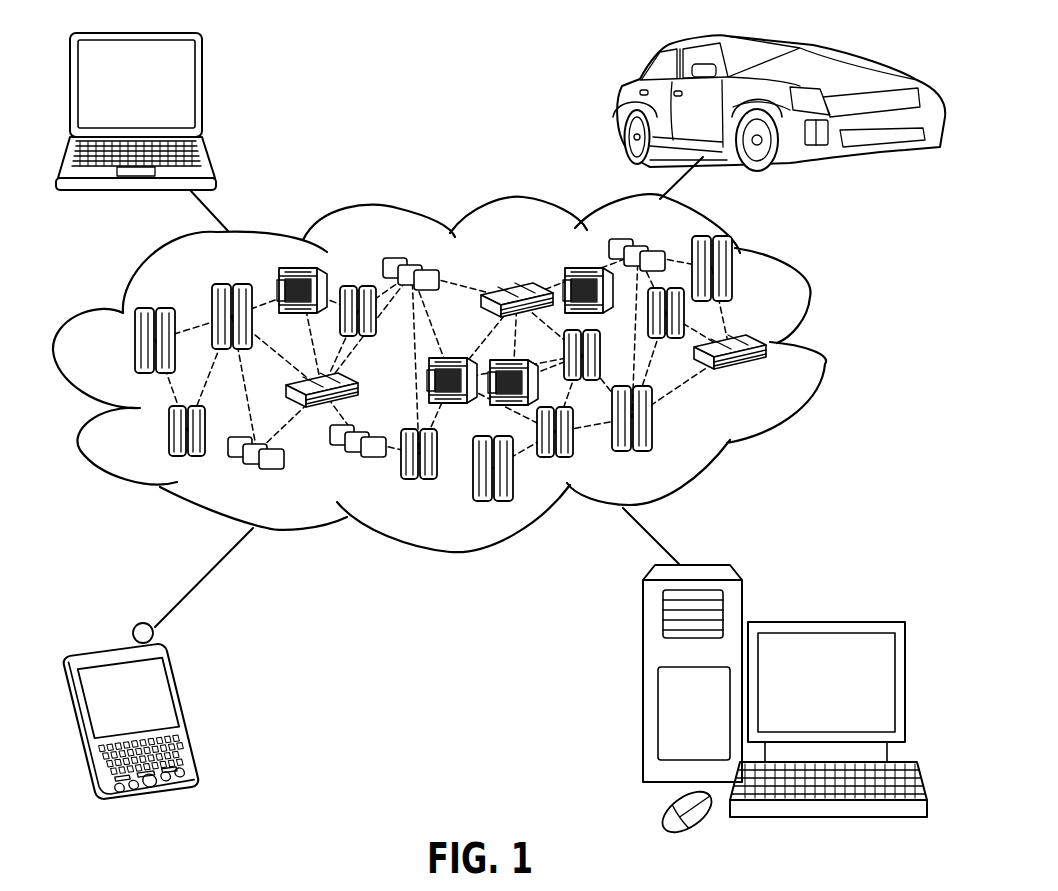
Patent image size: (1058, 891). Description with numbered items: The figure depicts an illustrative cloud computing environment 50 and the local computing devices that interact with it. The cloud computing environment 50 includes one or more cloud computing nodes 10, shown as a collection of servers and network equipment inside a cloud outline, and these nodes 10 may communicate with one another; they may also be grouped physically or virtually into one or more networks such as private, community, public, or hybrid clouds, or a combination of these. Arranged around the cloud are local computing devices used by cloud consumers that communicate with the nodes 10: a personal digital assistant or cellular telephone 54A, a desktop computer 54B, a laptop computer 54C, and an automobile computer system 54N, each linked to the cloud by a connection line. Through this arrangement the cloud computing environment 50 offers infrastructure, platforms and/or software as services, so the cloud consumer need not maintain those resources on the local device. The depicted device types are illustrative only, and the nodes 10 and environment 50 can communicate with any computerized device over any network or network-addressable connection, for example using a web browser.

The cloud computing nodes 10 is at (765, 376).
The cloud computing environment 50 is at (825, 350).
The personal digital assistant (PDA) or cellular telephone 54A is at (190, 708).
The desktop computer 54B is at (823, 622).
The laptop computer 54C is at (202, 92).
The automobile computer system 54N is at (617, 107).